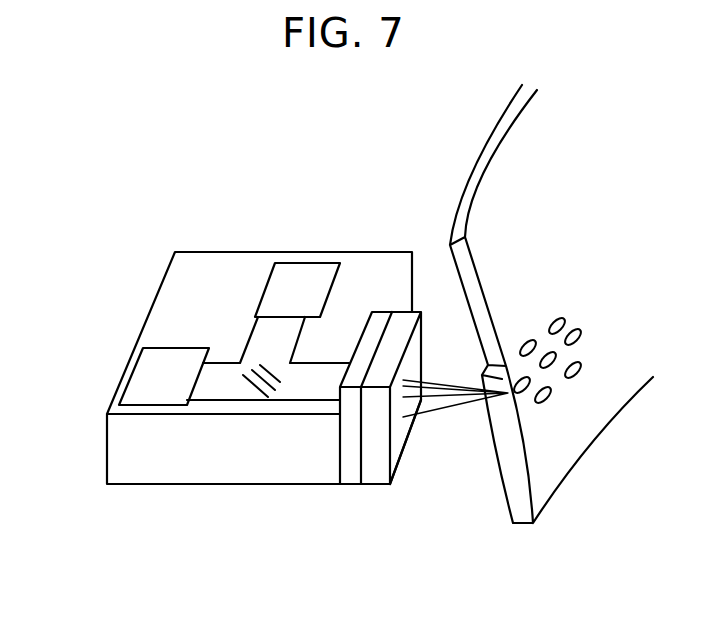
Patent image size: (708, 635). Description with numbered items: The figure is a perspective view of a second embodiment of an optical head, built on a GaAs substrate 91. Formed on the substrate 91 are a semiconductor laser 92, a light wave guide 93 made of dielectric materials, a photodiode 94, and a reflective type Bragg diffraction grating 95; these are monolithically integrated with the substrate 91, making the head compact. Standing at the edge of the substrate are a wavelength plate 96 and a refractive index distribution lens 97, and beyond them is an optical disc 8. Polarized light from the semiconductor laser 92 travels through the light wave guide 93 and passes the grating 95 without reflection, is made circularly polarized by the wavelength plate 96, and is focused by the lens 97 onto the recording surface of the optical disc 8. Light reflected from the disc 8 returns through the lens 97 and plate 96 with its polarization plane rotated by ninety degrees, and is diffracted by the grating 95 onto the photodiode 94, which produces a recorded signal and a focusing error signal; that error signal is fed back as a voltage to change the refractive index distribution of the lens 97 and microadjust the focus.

The optical disc 8 is at (520, 505).
The GaAs substrate 91 is at (167, 462).
The semiconductor laser 92 is at (142, 373).
The light wave guide 93 is at (297, 388).
The photodiode 94 is at (300, 273).
The reflective type Bragg diffraction grating 95 is at (265, 364).
The wavelength plate 96 is at (352, 470).
The refractive index distribution lens 97 is at (380, 468).